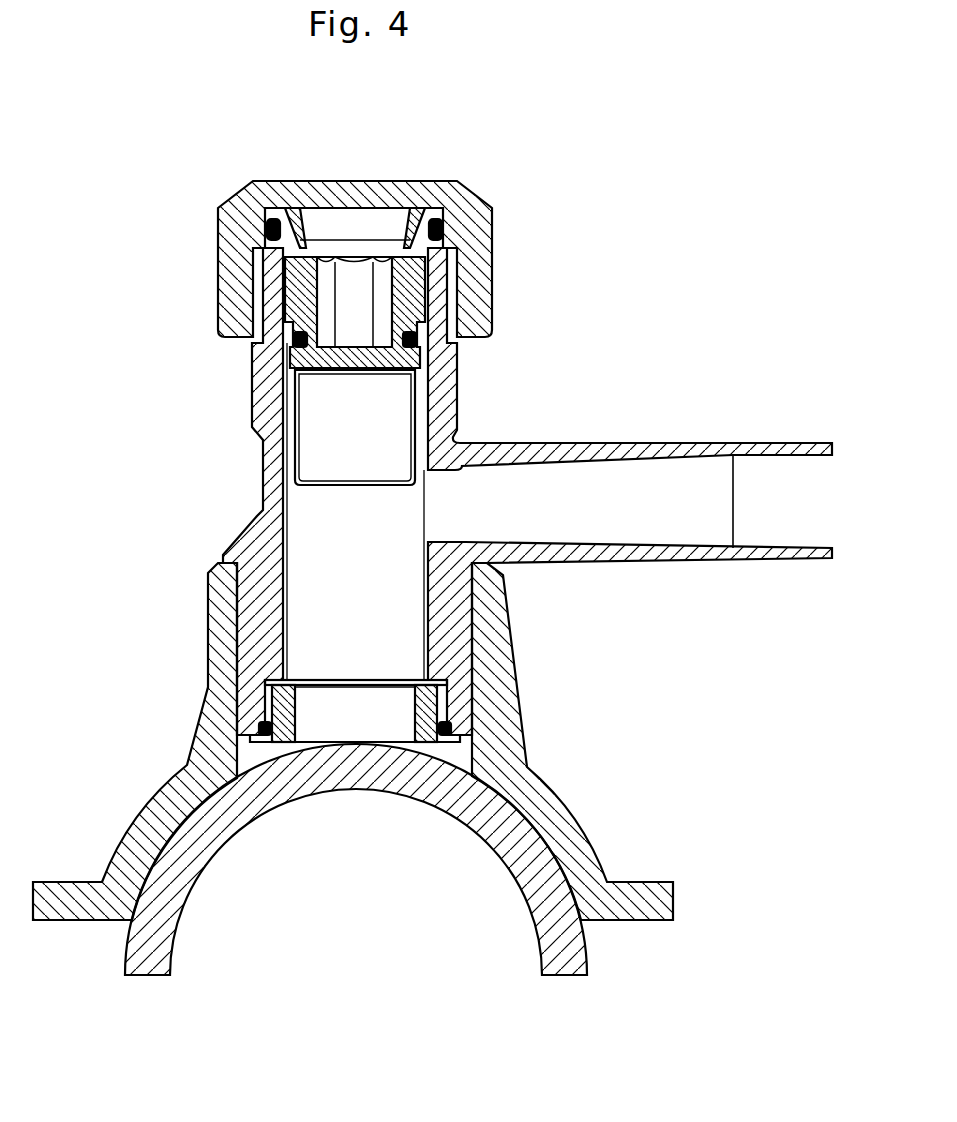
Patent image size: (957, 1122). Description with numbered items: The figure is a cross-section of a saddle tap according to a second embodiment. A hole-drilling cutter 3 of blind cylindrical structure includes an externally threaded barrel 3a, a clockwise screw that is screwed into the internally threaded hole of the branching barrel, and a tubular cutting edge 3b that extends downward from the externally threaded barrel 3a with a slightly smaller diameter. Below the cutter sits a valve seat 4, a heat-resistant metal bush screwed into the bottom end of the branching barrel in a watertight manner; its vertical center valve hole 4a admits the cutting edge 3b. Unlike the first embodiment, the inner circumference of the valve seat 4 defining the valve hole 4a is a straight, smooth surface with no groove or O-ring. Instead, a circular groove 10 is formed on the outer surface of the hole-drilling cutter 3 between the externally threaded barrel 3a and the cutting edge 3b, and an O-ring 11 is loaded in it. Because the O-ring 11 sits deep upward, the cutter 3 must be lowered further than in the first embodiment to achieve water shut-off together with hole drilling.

The hole-drilling cutter 3 is at (358, 407).
The externally threaded barrel 3a is at (300, 289).
The tubular cutting edge 3b is at (296, 445).
The valve seat 4 is at (433, 781).
The valve hole 4a is at (345, 717).
The circular groove 10 is at (245, 436).
The O-ring 11 is at (312, 336).